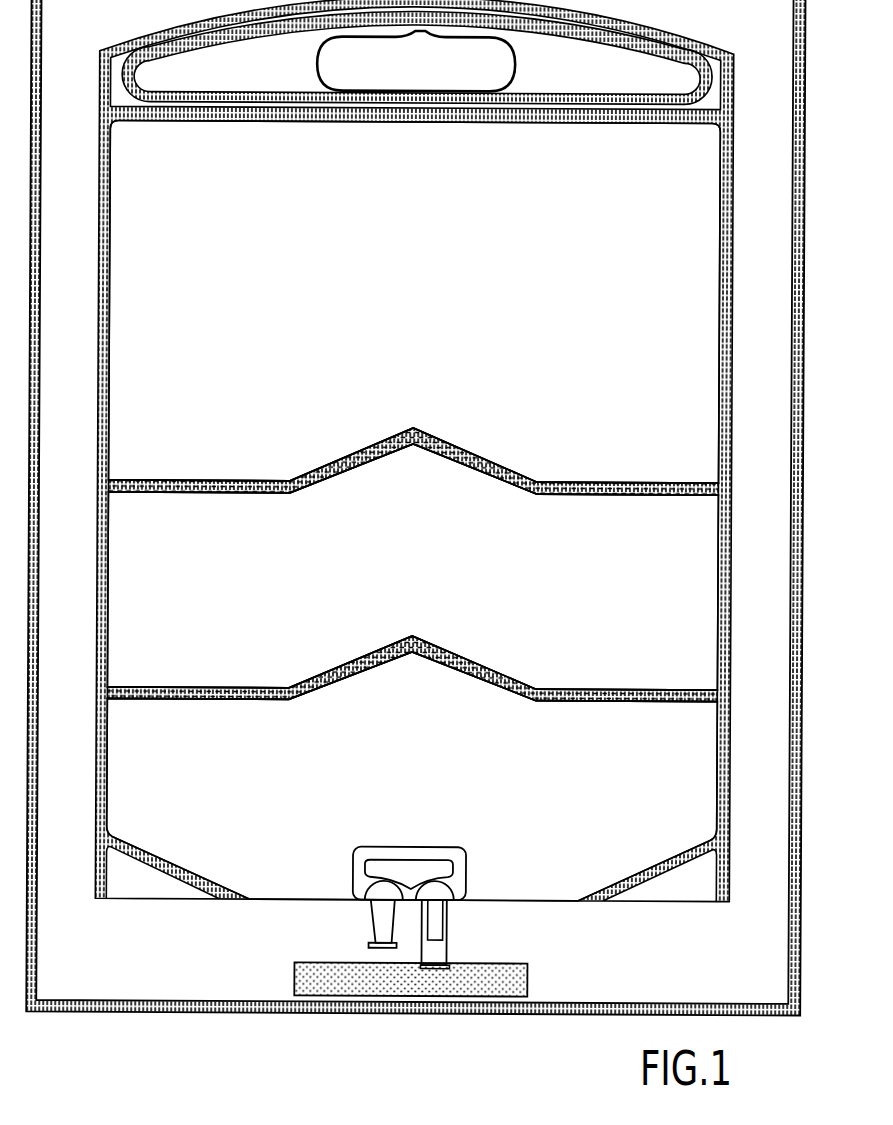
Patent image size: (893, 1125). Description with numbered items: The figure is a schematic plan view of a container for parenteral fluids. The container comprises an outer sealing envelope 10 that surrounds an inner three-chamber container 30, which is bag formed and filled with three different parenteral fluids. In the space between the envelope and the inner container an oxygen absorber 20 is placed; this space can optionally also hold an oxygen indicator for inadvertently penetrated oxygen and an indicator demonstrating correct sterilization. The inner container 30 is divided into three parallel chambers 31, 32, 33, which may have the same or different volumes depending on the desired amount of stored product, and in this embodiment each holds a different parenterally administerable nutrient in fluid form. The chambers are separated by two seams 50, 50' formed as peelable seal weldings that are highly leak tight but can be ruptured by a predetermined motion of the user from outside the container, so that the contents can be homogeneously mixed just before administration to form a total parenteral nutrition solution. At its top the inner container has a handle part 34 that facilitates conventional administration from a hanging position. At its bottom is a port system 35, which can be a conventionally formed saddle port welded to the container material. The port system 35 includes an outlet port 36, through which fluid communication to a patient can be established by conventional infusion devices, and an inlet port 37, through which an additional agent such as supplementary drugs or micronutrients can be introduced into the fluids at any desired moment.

The outer sealing envelope 10 is at (803, 434).
The oxygen absorber 20 is at (528, 982).
The inner three-chamber container 30 is at (728, 277).
The chamber 31 is at (138, 272).
The chamber 32 is at (128, 573).
The chamber 33 is at (136, 752).
The handle part 34 is at (547, 77).
The port system 35 is at (414, 871).
The outlet port 36 is at (437, 951).
The inlet port 37 is at (380, 919).
The seam 50 is at (413, 461).
The seam 50' is at (412, 665).